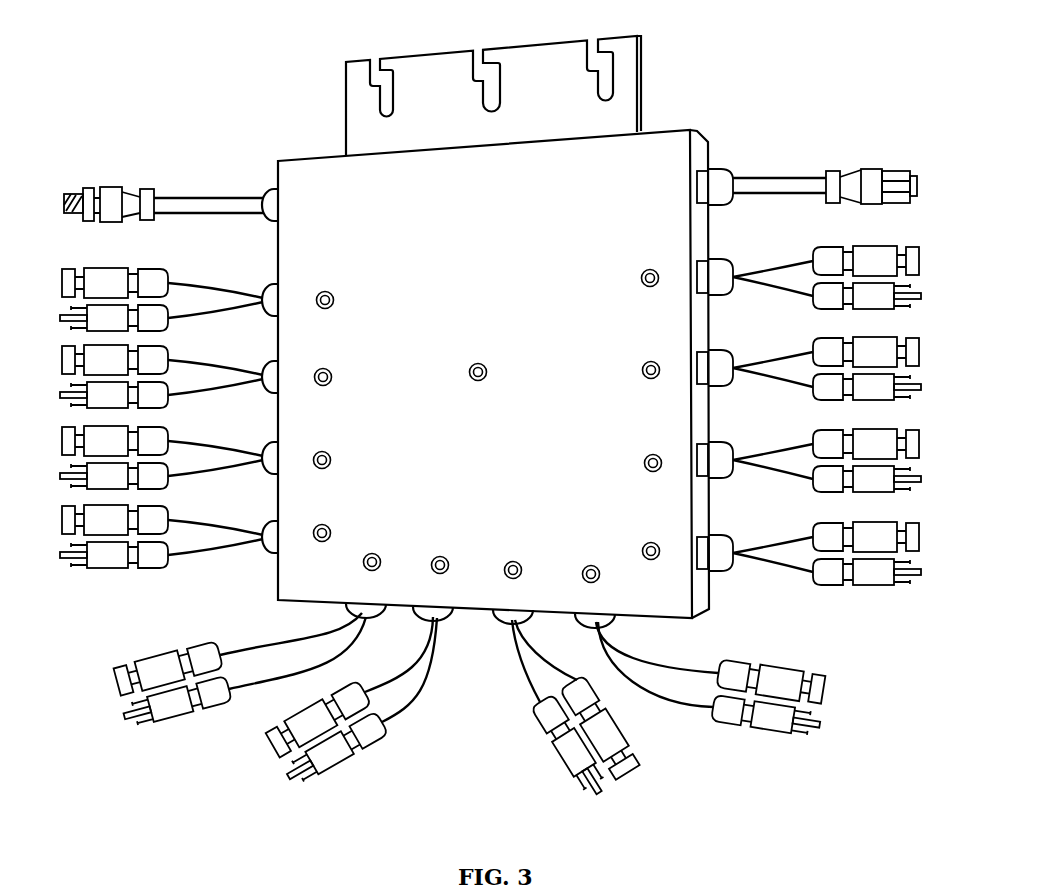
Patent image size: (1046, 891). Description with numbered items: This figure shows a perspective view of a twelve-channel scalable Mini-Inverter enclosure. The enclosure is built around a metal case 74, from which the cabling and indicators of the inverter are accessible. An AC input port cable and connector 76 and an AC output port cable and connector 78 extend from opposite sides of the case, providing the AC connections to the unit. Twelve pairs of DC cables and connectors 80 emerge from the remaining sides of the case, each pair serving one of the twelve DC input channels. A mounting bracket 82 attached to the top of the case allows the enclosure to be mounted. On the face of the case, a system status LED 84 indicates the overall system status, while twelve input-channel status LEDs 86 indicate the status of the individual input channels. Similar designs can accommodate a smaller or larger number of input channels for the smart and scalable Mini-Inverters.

The metal case 74 is at (658, 152).
The AC input port cable and connector 76 is at (868, 182).
The AC output port cable and connector 78 is at (110, 193).
The pairs of DC cables and connectors 80 is at (158, 272).
The mounting bracket 82 is at (622, 108).
The system status LED 84 is at (485, 364).
The input-channel status LEDs 86 is at (333, 293).